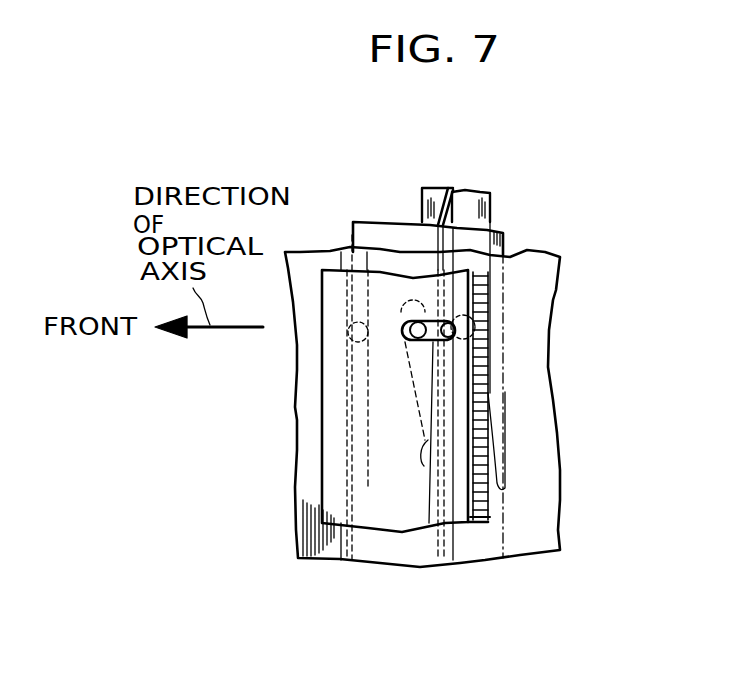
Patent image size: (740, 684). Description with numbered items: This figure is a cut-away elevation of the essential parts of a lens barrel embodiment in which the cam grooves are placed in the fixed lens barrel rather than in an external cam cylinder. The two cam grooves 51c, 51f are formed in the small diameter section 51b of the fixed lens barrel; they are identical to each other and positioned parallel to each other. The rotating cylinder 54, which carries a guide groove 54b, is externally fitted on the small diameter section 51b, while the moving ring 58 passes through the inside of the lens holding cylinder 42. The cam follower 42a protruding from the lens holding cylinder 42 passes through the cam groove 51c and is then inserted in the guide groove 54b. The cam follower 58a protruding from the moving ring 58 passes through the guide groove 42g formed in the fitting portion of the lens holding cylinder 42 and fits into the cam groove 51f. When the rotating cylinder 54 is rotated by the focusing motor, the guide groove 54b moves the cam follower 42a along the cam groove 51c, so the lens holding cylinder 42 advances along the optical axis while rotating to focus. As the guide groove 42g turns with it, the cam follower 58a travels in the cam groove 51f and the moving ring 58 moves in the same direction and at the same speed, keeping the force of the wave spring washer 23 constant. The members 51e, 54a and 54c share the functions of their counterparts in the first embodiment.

The wave spring washer 23 is at (445, 188).
The lens holding cylinder 42 is at (505, 232).
The cam follower 42a is at (409, 306).
The guide groove 42g is at (462, 352).
The small diameter section 51b is at (326, 250).
The cam groove 51c is at (420, 415).
The member of fixed lens barrel 51e is at (352, 235).
The cam groove 51f is at (490, 428).
The rotating cylinder 54 is at (338, 558).
The member of rotating cylinder 54a is at (368, 490).
The guide groove 54b is at (404, 322).
The member of rotating cylinder 54c is at (480, 517).
The moving ring 58 is at (482, 191).
The cam follower 58a is at (462, 323).